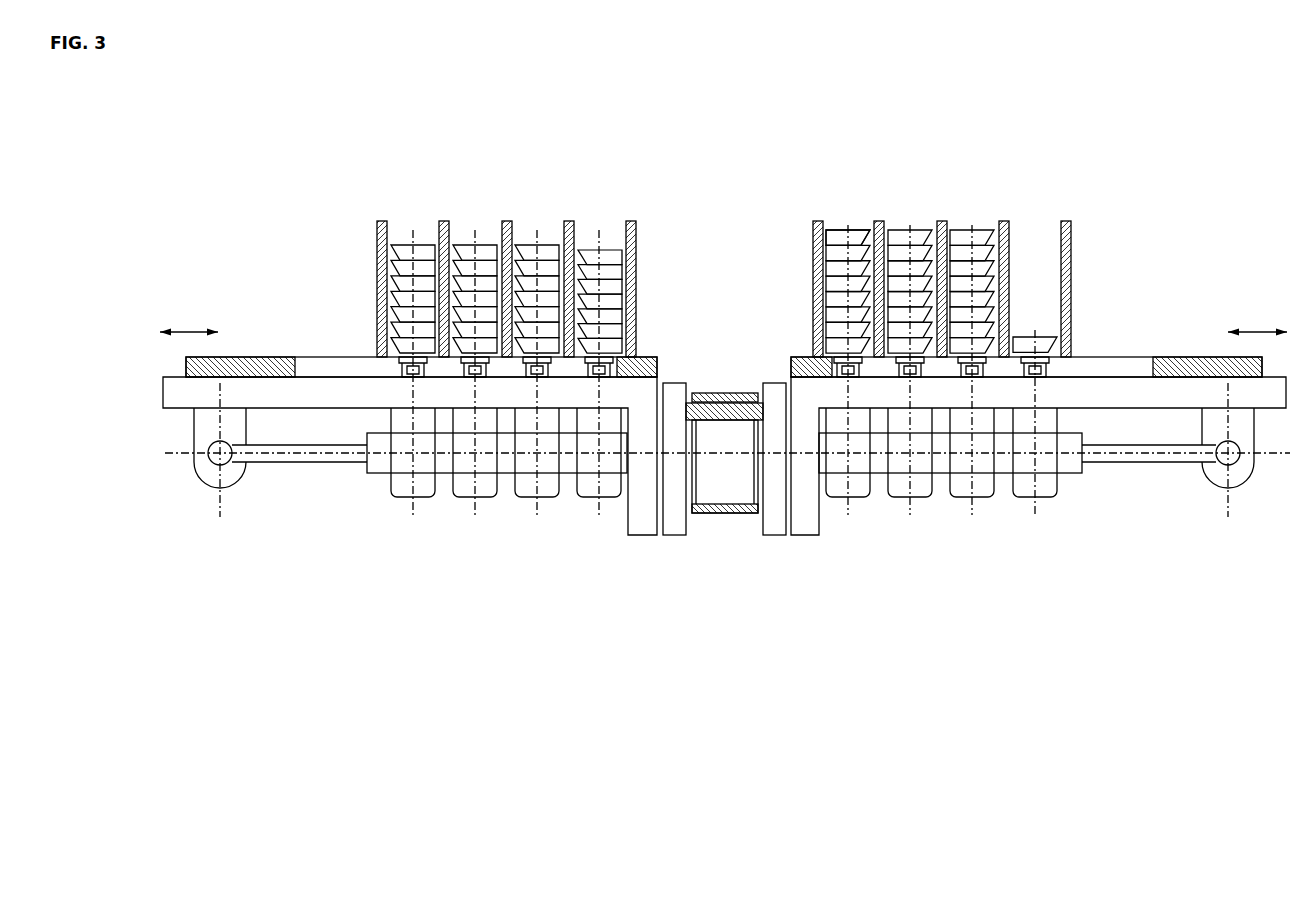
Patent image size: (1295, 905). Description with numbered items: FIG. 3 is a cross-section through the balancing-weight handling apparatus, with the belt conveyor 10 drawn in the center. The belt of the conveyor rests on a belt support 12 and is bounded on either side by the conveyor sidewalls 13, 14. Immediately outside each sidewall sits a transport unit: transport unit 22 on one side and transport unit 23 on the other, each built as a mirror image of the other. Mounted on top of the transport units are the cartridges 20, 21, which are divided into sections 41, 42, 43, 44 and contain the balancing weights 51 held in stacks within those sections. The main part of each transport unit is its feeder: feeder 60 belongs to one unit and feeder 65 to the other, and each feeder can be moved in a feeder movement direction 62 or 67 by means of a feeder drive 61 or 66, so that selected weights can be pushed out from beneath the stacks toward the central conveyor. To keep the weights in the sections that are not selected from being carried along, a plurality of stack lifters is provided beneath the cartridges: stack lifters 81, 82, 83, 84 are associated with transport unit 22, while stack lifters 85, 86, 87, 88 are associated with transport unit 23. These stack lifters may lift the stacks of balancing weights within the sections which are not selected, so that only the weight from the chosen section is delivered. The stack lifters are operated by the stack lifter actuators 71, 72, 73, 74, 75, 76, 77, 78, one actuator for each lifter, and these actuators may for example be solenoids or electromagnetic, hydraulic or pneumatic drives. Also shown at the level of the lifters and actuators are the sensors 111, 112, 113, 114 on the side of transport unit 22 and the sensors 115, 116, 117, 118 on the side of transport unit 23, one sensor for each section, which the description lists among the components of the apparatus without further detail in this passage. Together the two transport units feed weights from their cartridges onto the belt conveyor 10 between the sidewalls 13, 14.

The belt conveyor 10 is at (740, 403).
The belt support 12 is at (705, 393).
The conveyor sidewall 13 is at (775, 535).
The conveyor sidewall 14 is at (675, 535).
The cartridge 20 is at (1080, 210).
The cartridge 21 is at (368, 208).
The transport unit 22 is at (1106, 337).
The transport unit 23 is at (340, 337).
The section 41 is at (840, 165).
The section 42 is at (902, 167).
The section 43 is at (963, 165).
The section 44 is at (1027, 167).
The balancing weights 51 is at (843, 232).
The feeder 60 is at (1189, 357).
The feeder drive 61 is at (1130, 462).
The feeder movement direction 62 is at (1258, 330).
The feeder 65 is at (261, 357).
The feeder drive 66 is at (313, 462).
The feeder movement direction 67 is at (192, 330).
The stack lifter actuator 71 is at (863, 488).
The stack lifter actuator 72 is at (925, 488).
The stack lifter actuator 73 is at (987, 488).
The stack lifter actuator 74 is at (1049, 488).
The stack lifter actuator 75 is at (592, 487).
The stack lifter actuator 76 is at (530, 487).
The stack lifter actuator 77 is at (468, 487).
The stack lifter actuator 78 is at (407, 487).
The stack lifter 81 is at (843, 372).
The stack lifter 82 is at (905, 372).
The stack lifter 83 is at (967, 372).
The stack lifter 84 is at (1030, 372).
The stack lifter 85 is at (603, 372).
The stack lifter 86 is at (545, 372).
The stack lifter 87 is at (483, 372).
The stack lifter 88 is at (420, 372).
The sensor 111 is at (950, 370).
The sensor 112 is at (932, 370).
The sensor 113 is at (994, 370).
The sensor 114 is at (1056, 422).
The sensor 115 is at (580, 372).
The sensor 116 is at (517, 372).
The sensor 117 is at (455, 372).
The sensor 118 is at (497, 372).